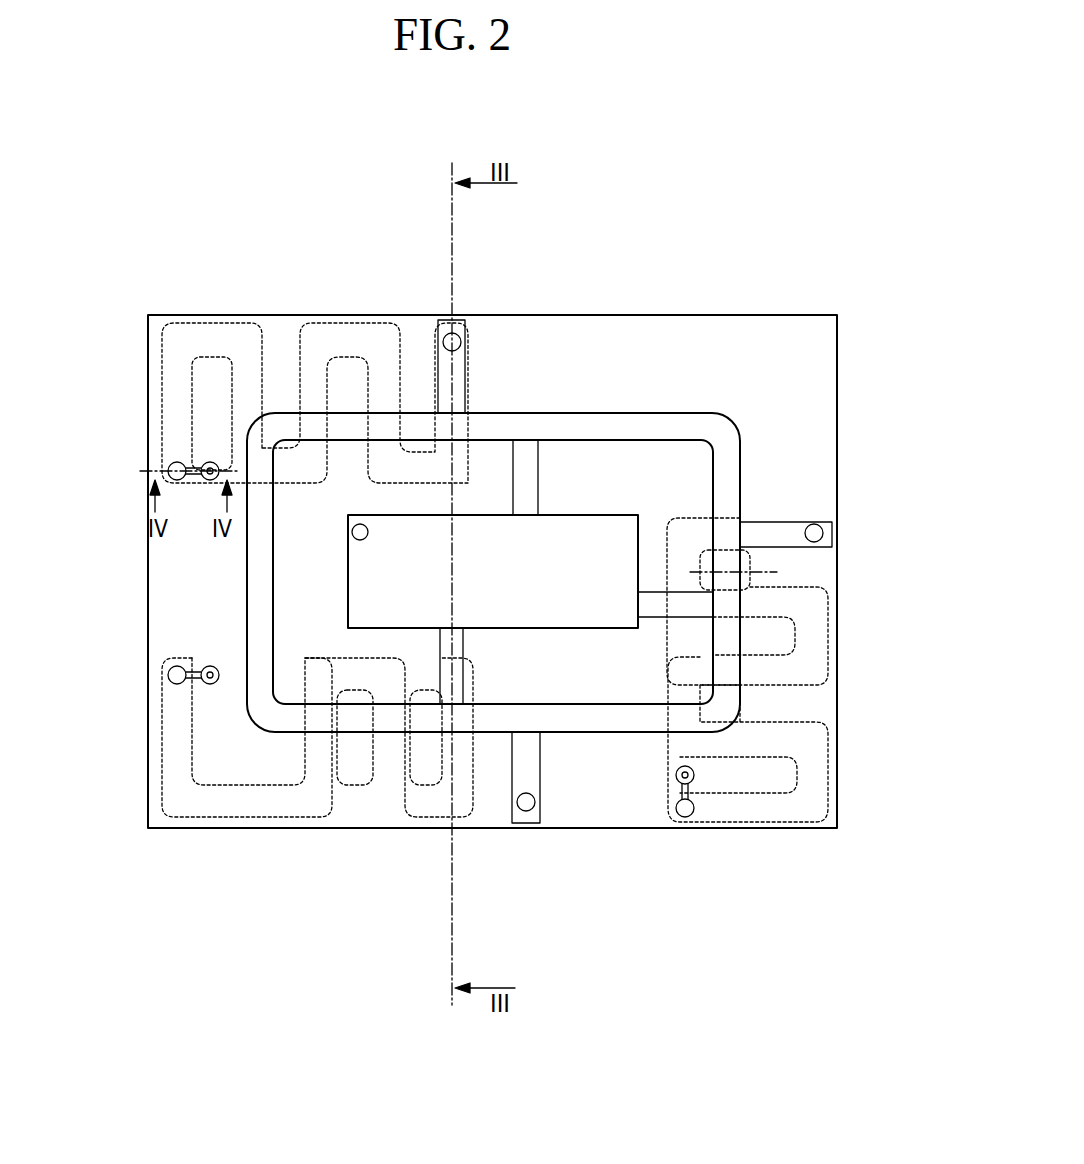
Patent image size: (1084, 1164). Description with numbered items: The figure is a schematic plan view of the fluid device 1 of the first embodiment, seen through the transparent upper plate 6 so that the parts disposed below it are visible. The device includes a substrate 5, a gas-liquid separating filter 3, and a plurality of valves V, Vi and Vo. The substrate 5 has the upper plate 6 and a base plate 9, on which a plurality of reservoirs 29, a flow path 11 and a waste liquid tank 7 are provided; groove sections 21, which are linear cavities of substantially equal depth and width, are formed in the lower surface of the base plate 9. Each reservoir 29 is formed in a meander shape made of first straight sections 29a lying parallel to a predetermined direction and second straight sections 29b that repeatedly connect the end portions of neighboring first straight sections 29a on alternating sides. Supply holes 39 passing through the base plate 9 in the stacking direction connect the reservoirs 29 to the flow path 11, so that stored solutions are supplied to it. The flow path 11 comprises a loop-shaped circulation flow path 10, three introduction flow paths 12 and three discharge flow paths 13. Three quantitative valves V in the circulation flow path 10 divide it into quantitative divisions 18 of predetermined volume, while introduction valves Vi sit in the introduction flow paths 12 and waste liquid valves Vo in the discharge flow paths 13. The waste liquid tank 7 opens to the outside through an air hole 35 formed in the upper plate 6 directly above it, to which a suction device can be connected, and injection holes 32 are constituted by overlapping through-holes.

The fluid device 1 is at (840, 90).
The gas-liquid separating filter 3 is at (168, 473).
The substrate 5 is at (789, 296).
The upper plate 6 is at (812, 323).
The waste liquid tank 7 is at (348, 577).
The base plate 9 is at (840, 350).
The circulation flow path 10 is at (660, 423).
The flow path 11 is at (606, 398).
The introduction flow paths 12 is at (460, 403).
The discharge flow paths 13 is at (528, 443).
The quantitative divisions 18 is at (706, 407).
The groove sections 21 is at (312, 323).
The reservoirs 29 is at (188, 304).
The first straight sections 29a is at (243, 392).
The second straight sections 29b is at (218, 340).
The injection holes 32 is at (173, 463).
The air hole 35 is at (368, 529).
The supply holes 39 is at (455, 330).